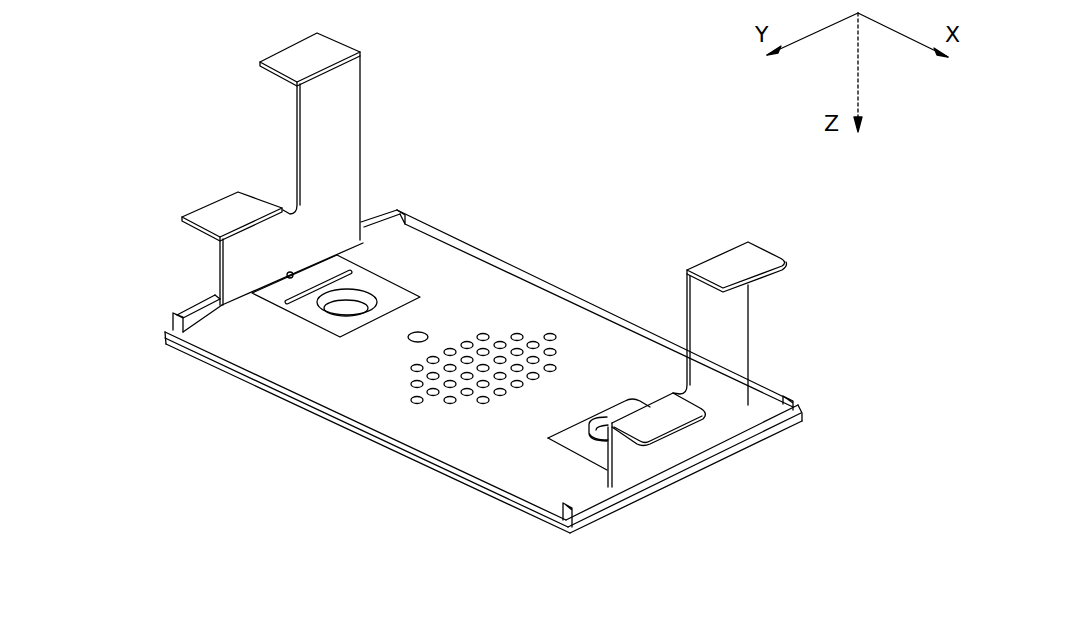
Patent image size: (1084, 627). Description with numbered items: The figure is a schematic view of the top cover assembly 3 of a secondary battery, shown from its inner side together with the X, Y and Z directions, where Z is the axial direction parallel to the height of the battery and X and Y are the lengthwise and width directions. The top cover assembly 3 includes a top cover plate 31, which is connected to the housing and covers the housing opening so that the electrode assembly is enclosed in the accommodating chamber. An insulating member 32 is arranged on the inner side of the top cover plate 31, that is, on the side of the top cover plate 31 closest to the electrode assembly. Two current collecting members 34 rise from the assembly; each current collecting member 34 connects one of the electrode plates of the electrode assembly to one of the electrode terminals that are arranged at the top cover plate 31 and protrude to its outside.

The top cover assembly 3 is at (135, 45).
The top cover plate 31 is at (523, 508).
The insulating member 32 is at (412, 425).
The current collecting member 34 is at (262, 240).